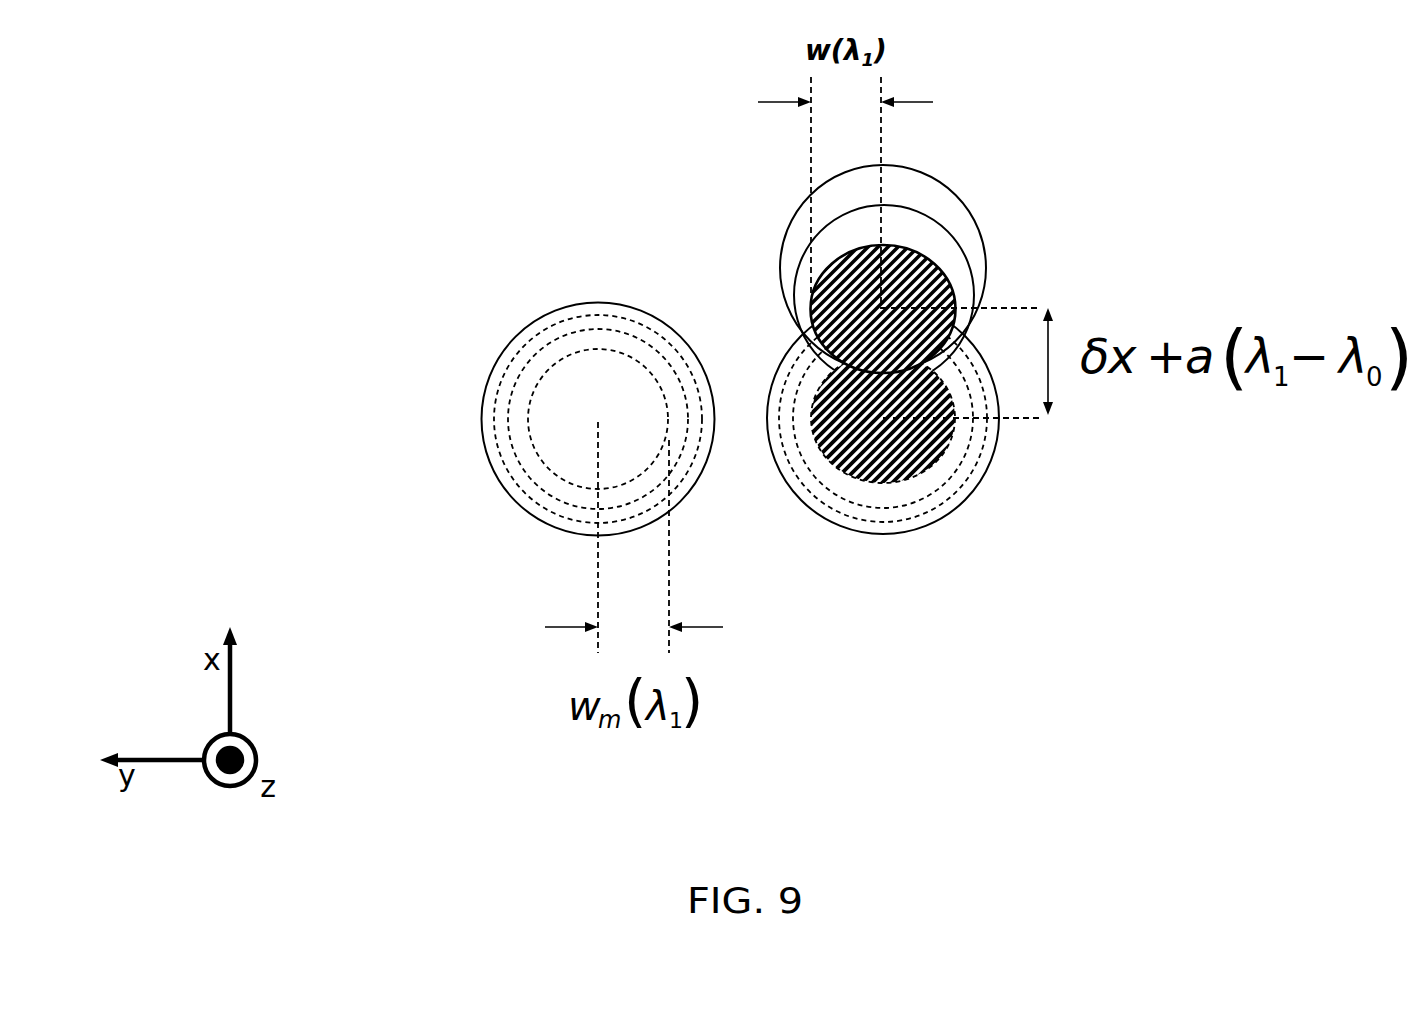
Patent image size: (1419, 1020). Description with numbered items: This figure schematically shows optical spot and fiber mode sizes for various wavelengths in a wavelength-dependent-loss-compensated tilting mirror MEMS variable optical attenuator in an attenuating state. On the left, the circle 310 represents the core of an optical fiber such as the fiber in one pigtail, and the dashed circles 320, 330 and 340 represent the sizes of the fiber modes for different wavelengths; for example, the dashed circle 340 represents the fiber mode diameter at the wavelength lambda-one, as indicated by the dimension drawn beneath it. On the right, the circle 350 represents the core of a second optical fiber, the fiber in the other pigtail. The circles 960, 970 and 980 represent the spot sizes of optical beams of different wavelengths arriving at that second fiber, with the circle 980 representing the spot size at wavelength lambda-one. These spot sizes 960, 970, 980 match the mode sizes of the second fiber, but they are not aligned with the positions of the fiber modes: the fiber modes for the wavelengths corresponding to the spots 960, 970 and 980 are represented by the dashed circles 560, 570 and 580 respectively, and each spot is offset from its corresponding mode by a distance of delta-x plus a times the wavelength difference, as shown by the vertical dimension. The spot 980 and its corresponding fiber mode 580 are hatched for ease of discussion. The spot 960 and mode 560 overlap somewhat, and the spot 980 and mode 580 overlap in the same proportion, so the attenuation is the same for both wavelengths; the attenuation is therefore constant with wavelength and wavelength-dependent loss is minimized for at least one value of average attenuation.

The core of an optical fiber 310 is at (500, 357).
The fiber mode 320 is at (545, 332).
The fiber mode 330 is at (603, 337).
The fiber mode 340 is at (638, 367).
The core of an optical fiber 350 is at (973, 492).
The fiber mode 560 is at (945, 503).
The fiber mode 570 is at (898, 502).
The fiber mode 580 is at (868, 480).
The spot 960 is at (950, 188).
The spot 970 is at (950, 230).
The spot 980 is at (948, 280).